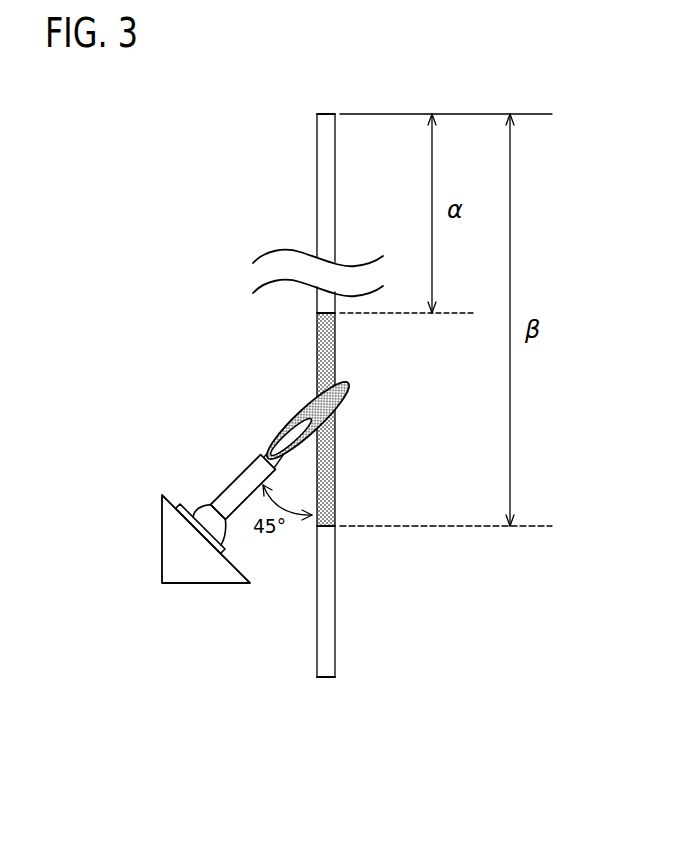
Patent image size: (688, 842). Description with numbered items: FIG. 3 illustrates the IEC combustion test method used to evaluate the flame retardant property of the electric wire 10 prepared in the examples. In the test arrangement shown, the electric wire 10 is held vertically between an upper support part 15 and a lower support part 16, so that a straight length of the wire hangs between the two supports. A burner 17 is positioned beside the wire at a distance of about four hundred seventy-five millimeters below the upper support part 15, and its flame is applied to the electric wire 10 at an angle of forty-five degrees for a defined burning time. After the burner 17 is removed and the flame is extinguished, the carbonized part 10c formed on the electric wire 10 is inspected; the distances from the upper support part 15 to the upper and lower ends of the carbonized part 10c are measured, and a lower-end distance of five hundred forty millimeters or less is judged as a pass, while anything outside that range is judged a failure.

The electric wire 10 is at (322, 188).
The carbonized part 10c is at (317, 354).
The upper support part 15 is at (316, 114).
The lower support part 16 is at (316, 677).
The burner 17 is at (238, 477).